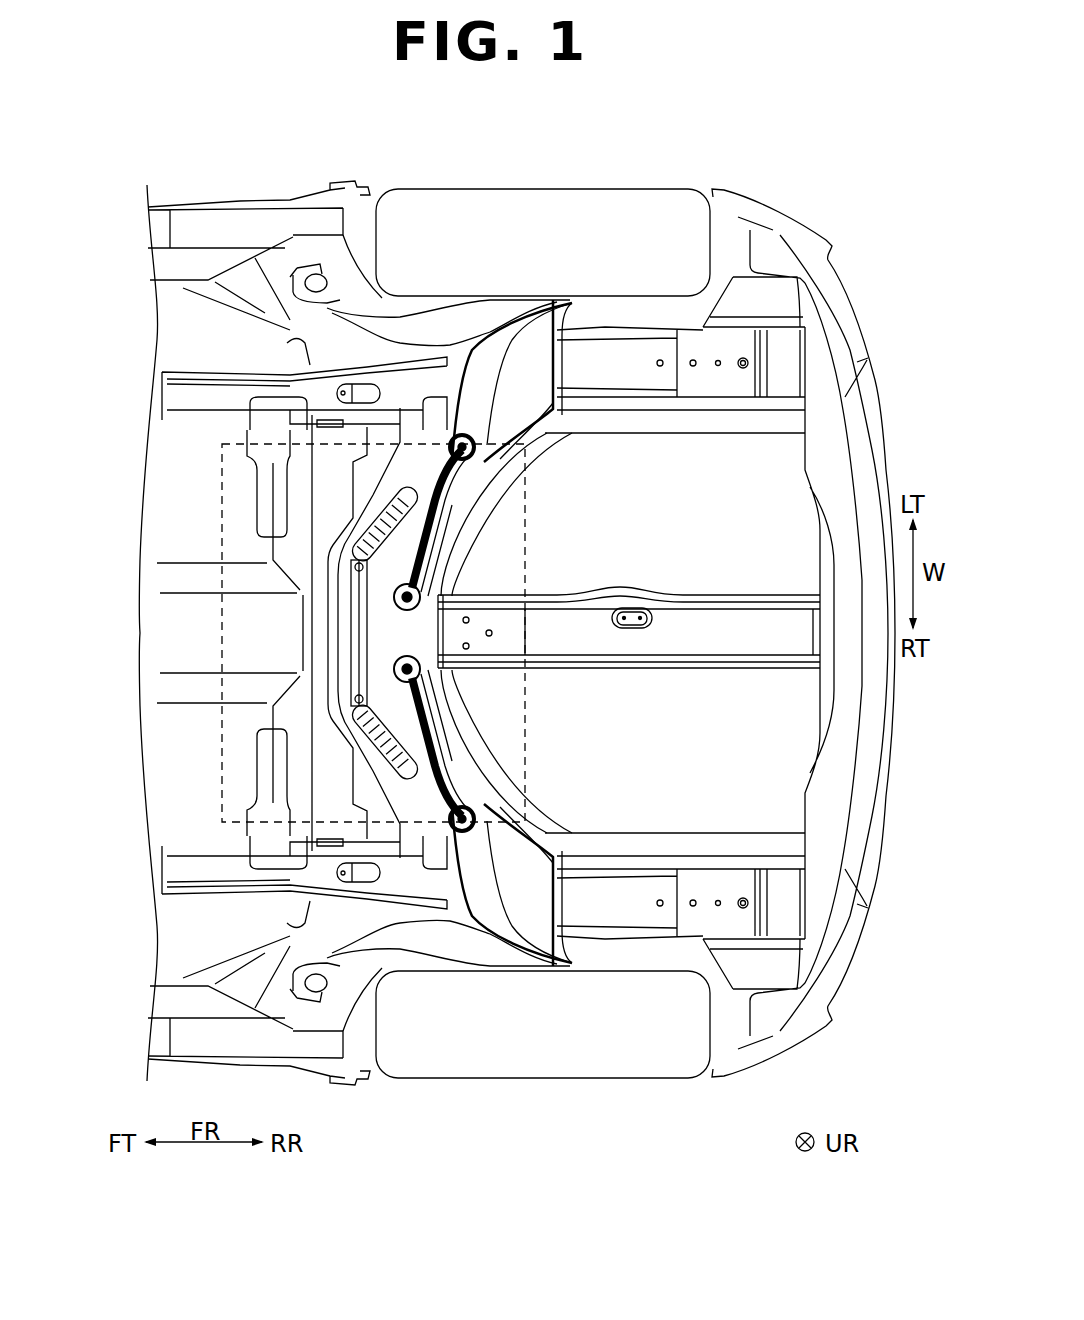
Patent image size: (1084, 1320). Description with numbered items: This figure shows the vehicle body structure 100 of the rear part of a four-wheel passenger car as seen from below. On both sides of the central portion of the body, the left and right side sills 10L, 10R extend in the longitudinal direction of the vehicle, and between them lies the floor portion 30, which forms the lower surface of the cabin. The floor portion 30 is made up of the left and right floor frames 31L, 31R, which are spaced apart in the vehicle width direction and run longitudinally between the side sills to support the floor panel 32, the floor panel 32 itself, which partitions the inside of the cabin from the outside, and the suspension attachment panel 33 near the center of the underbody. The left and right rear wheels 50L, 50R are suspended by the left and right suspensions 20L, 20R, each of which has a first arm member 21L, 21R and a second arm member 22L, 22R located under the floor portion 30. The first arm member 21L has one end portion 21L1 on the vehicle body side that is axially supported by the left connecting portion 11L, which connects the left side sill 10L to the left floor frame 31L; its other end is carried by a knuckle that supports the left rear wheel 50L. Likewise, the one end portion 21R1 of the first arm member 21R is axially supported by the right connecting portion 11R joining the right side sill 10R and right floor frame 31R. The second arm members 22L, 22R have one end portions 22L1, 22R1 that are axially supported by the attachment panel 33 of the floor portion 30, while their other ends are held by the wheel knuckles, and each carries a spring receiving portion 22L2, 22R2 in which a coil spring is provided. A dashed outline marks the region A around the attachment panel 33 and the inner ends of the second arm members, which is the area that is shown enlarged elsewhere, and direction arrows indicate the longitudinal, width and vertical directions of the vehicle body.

The vehicle body structure 100 is at (815, 141).
The left side sill 10L is at (181, 229).
The right side sill 10R is at (181, 1037).
The left connecting portion 11L is at (287, 343).
The right connecting portion 11R is at (287, 923).
The left suspension 20L is at (578, 316).
The right suspension 20R is at (578, 950).
The first arm member 21L is at (343, 291).
The first arm member 21R is at (342, 968).
The one end portion 21L1 is at (312, 270).
The one end portion 21R1 is at (320, 982).
The second arm member 22L is at (532, 522).
The second arm member 22R is at (533, 744).
The one end portion 22L1 is at (410, 596).
The one end portion 22R1 is at (410, 670).
The spring receiving portion 22L2 is at (547, 434).
The spring receiving portion 22R2 is at (547, 832).
The floor portion 30 is at (135, 521).
The left floor frame 31L is at (167, 388).
The right floor frame 31R is at (167, 878).
The floor panel 32 is at (172, 769).
The suspension attachment panel 33 is at (388, 778).
The left rear wheel 50L is at (537, 212).
The right rear wheel 50R is at (541, 1058).
The region A is at (220, 460).